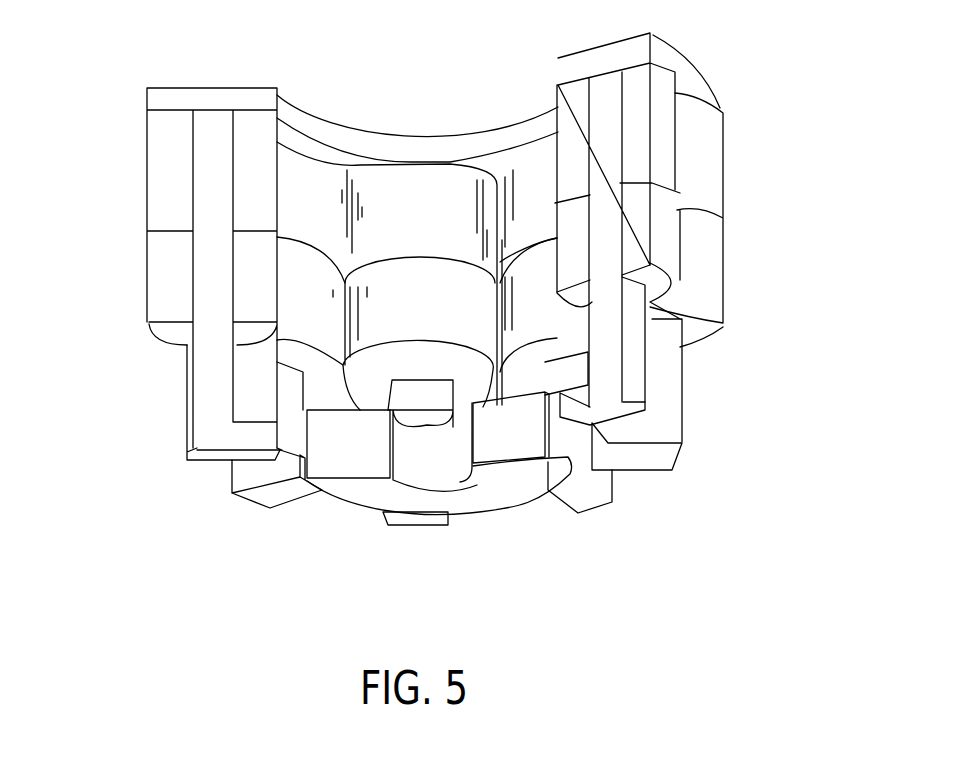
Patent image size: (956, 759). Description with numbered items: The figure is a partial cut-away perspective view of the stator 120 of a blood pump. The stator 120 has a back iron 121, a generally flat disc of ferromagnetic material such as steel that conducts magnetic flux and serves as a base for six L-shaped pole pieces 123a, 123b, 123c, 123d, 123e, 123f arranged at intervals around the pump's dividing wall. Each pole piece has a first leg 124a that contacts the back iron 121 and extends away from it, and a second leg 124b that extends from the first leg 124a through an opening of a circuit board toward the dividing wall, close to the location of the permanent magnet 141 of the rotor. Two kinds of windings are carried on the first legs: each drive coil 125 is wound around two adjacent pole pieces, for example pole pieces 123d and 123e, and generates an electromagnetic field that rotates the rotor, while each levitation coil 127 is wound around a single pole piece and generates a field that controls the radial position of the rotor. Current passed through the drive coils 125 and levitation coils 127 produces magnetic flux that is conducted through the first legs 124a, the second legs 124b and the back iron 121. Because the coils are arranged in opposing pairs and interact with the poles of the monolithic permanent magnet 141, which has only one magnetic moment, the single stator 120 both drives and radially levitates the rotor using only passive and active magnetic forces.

The stator 120 is at (262, 590).
The back iron 121 is at (213, 95).
The pole piece 123a is at (623, 374).
The pole piece 123b is at (665, 451).
The pole piece 123c is at (578, 500).
The pole piece 123d is at (422, 520).
The pole piece 123e is at (258, 505).
The pole piece 123f is at (197, 470).
The first leg 124a is at (602, 148).
The second leg 124b is at (597, 420).
The drive coil 125 is at (312, 165).
The levitation coil 127 is at (153, 295).
The permanent magnet 141 is at (362, 485).